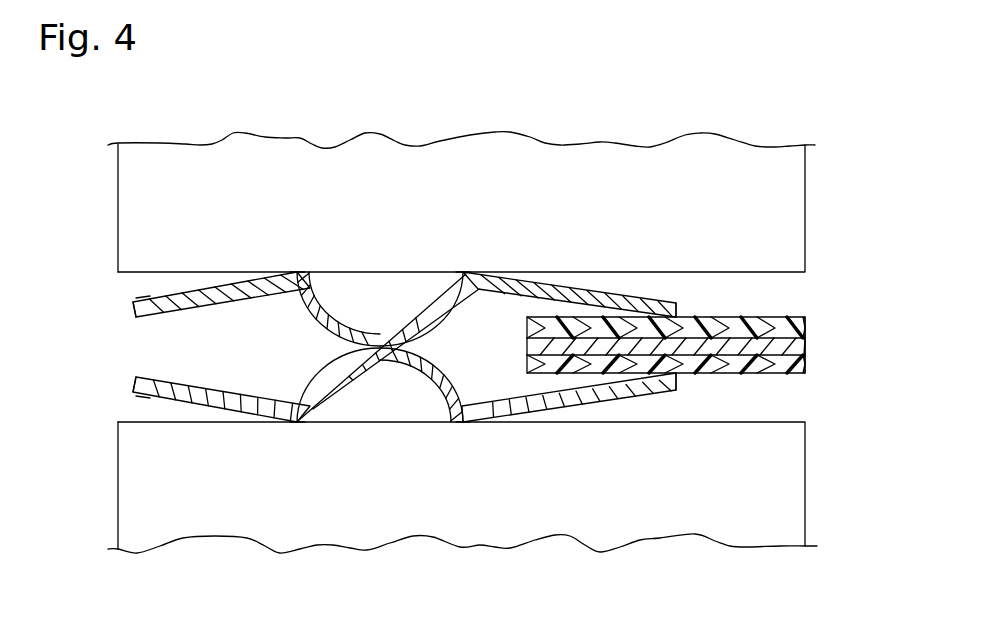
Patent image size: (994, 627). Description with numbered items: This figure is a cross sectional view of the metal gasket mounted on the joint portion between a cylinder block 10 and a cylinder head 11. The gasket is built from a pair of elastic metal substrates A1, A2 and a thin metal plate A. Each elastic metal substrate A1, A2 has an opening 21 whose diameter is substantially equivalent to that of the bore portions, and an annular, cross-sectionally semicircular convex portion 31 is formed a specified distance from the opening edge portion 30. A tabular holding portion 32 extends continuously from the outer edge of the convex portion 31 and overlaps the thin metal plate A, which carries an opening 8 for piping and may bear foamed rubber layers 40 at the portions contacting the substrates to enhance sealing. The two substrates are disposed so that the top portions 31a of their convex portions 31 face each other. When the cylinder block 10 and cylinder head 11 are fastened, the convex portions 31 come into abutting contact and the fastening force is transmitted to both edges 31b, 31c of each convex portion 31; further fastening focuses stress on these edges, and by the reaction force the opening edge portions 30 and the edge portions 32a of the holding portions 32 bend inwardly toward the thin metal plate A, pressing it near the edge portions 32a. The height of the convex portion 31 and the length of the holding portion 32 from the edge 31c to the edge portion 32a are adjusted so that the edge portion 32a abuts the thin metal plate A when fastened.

The opening for piping 8 is at (850, 390).
The cylinder block 10 is at (476, 521).
The cylinder head 11 is at (476, 188).
The opening 21 is at (108, 357).
The opening edge portion 30 is at (133, 310).
The convex portion 31 is at (302, 305).
The top portion 31a is at (380, 336).
The edge of the convex portion 31b is at (297, 272).
The edge of the convex portion 31c is at (463, 272).
The holding portion 32 is at (470, 284).
The edge portion of the holding portion 32a is at (683, 303).
The foamed rubber layer 40 is at (750, 317).
The thin metal plate A is at (805, 346).
The elastic metal substrate A1 is at (143, 298).
The elastic metal substrate A2 is at (147, 396).